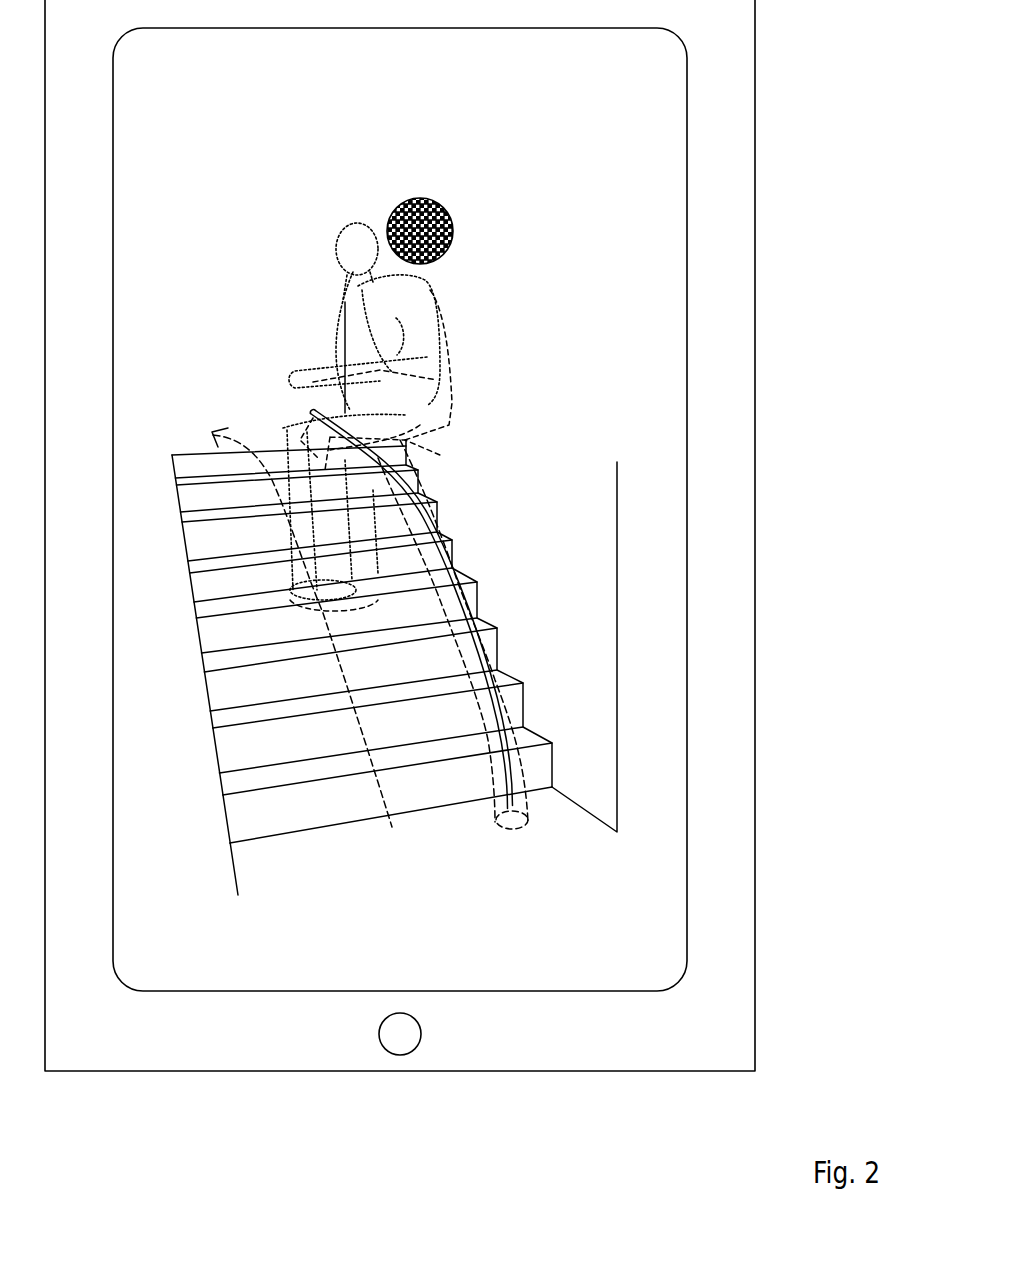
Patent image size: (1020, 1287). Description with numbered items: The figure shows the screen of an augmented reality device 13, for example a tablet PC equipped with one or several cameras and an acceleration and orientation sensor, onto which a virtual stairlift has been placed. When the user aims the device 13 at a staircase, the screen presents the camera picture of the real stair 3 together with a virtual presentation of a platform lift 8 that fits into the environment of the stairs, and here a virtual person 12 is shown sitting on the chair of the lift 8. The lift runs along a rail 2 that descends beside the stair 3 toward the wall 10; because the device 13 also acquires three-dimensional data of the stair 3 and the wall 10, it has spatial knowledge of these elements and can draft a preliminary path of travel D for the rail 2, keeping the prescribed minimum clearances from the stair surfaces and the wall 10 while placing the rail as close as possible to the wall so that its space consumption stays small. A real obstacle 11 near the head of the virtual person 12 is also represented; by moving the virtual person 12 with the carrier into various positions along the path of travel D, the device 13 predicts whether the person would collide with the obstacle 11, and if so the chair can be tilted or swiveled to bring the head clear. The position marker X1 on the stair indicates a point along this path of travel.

The augmented reality device 13 is at (756, 53).
The virtual person 12 is at (333, 241).
The obstacle 11 is at (455, 223).
The platform lift 8 is at (452, 405).
The rail 2 is at (428, 522).
The stair 3 is at (197, 594).
The wall 10 is at (580, 511).
The preliminary path of travel D is at (477, 605).
The travel path position X1 is at (303, 532).